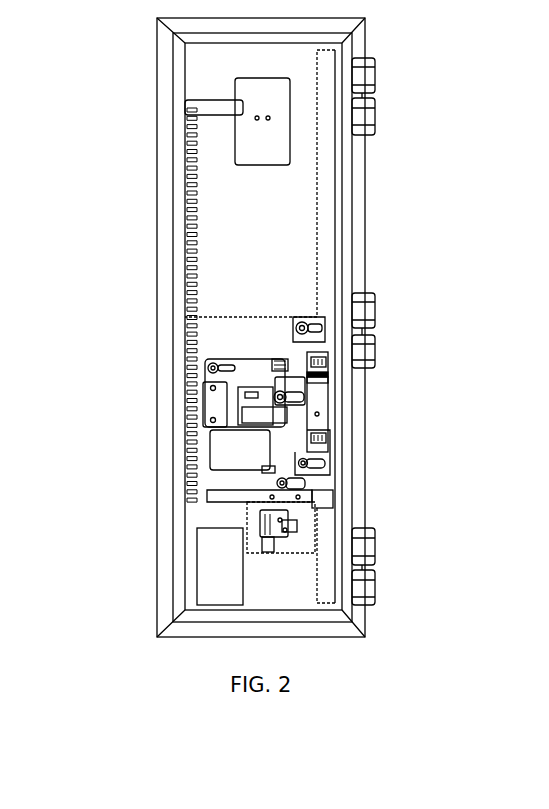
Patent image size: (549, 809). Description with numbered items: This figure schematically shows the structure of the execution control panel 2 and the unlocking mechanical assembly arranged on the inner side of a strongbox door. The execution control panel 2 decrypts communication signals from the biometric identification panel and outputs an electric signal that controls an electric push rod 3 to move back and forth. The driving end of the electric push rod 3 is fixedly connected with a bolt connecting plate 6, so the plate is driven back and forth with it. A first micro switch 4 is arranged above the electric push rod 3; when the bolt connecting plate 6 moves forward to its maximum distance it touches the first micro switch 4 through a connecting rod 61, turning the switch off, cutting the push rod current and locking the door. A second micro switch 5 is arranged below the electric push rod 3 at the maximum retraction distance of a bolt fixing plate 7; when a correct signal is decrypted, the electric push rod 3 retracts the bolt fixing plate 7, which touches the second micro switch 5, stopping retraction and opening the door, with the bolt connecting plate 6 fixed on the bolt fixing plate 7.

The execution control panel 2 is at (258, 446).
The electric push rod 3 is at (327, 358).
The first micro switch 4 is at (284, 366).
The second micro switch 5 is at (296, 494).
The bolt connecting plate 6 is at (389, 351).
The connecting rod 61 is at (310, 379).
The bolt fixing plate 7 is at (323, 470).